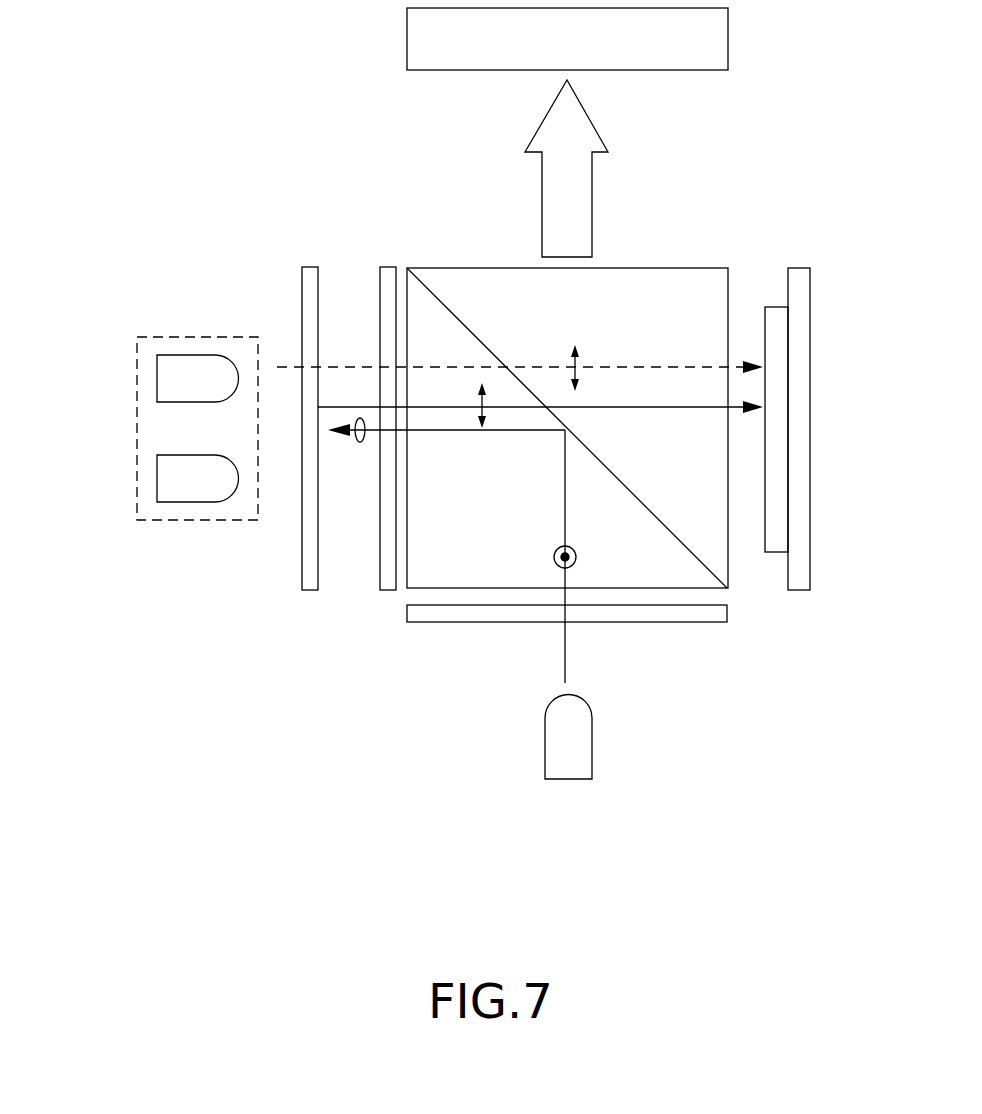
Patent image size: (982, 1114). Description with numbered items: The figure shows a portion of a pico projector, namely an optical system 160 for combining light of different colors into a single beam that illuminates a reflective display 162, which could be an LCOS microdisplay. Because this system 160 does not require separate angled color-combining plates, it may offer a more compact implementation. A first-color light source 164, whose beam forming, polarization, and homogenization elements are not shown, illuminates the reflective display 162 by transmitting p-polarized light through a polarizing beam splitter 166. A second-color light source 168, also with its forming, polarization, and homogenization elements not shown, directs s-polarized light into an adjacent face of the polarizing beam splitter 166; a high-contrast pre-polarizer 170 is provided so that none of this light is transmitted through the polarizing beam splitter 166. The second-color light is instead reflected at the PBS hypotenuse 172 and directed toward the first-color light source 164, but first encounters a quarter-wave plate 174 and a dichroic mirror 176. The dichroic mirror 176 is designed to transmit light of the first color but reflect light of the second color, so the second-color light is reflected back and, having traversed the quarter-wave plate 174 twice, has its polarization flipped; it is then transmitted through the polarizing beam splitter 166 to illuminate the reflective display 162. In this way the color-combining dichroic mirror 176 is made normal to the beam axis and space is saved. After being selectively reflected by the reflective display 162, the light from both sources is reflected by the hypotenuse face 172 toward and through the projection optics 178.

The optical system 160 is at (409, 155).
The reflective display 162 is at (776, 307).
The first-color light source 164 is at (152, 433).
The polarizing beam splitter 166 is at (635, 293).
The second-color light source 168 is at (555, 755).
The high-contrast pre-polarizer 170 is at (435, 612).
The PBS hypotenuse 172 is at (673, 532).
The quarter-wave plate 174 is at (385, 580).
The dichroic mirror 176 is at (310, 573).
The projection optics 178 is at (722, 40).